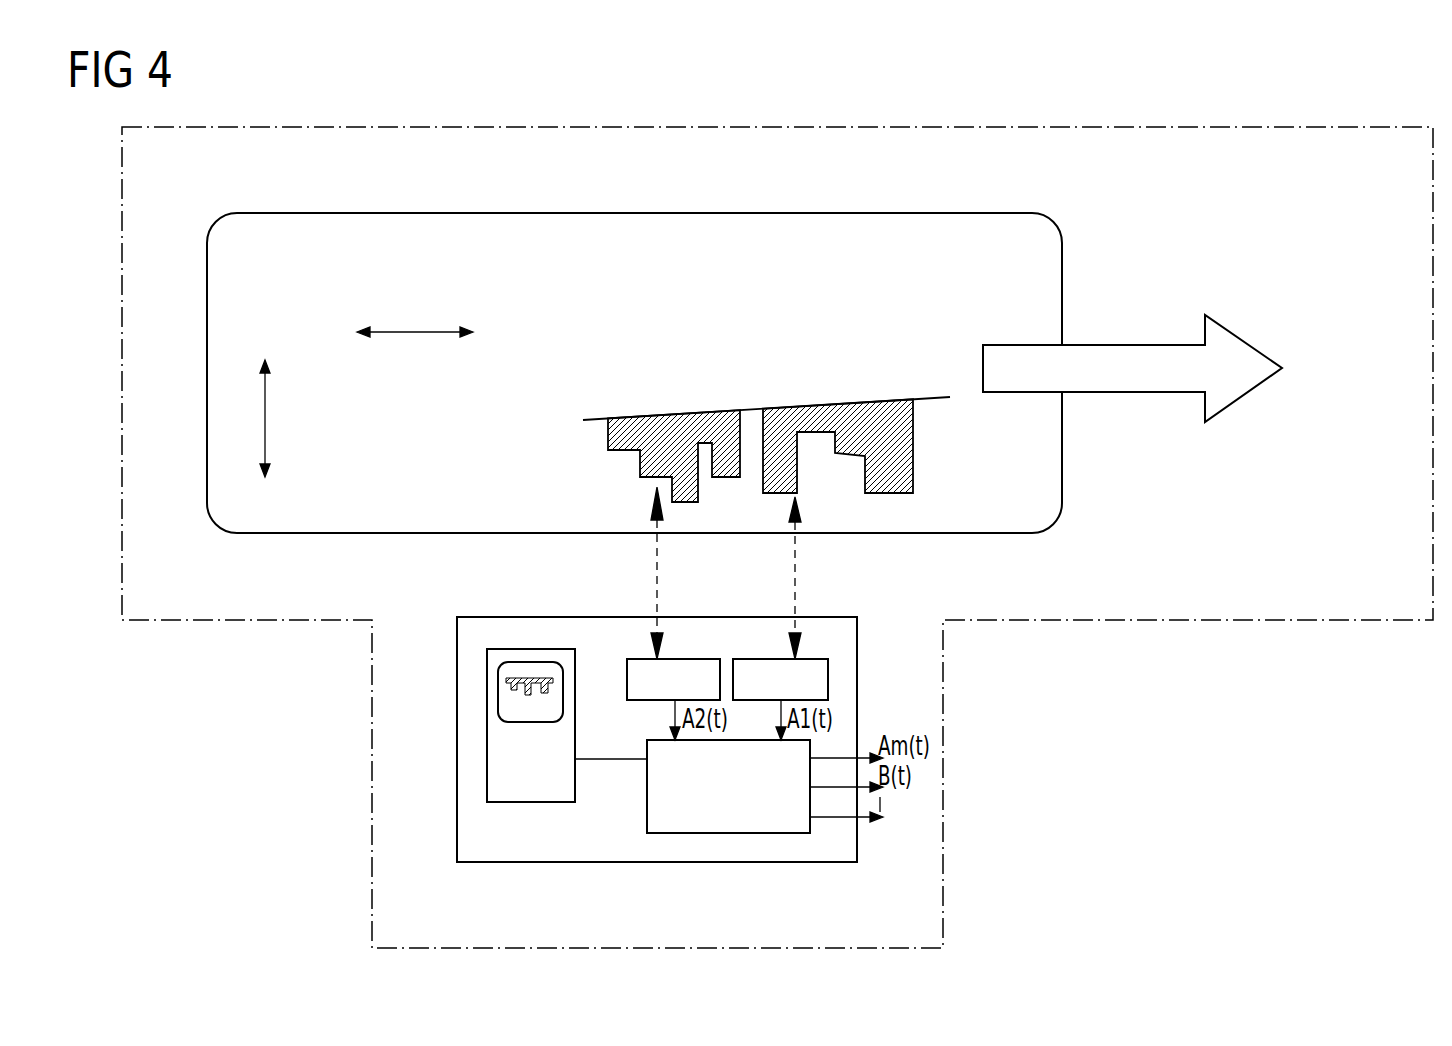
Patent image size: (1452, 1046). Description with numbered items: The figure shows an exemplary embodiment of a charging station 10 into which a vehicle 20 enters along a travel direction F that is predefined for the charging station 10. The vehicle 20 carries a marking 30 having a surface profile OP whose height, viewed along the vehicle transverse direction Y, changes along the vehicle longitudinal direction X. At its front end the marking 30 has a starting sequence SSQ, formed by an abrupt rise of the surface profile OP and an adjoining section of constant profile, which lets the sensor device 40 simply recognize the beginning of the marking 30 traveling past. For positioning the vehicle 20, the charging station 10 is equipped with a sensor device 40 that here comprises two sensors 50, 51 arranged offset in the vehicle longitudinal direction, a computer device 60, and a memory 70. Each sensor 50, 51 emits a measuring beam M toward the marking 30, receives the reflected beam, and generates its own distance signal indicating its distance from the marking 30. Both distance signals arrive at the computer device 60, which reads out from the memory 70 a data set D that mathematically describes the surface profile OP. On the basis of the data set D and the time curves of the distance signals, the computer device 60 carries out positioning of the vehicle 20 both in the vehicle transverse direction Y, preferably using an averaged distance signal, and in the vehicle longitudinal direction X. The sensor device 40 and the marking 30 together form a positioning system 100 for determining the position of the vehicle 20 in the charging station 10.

The charging station 10 is at (1140, 620).
The vehicle 20 is at (497, 213).
The marking 30 is at (883, 408).
The sensor device 40 is at (556, 862).
The sensor 50 is at (828, 672).
The sensor 51 is at (645, 659).
The computer device 60 is at (705, 833).
The memory 70 is at (487, 760).
The positioning system 100 is at (266, 660).
The travel direction F is at (1128, 345).
The vehicle longitudinal direction X is at (412, 330).
The vehicle transverse direction Y is at (265, 423).
The surface profile OP is at (697, 415).
The starting sequence SSQ is at (913, 453).
The measuring beam M is at (729, 573).
The data set D is at (498, 700).